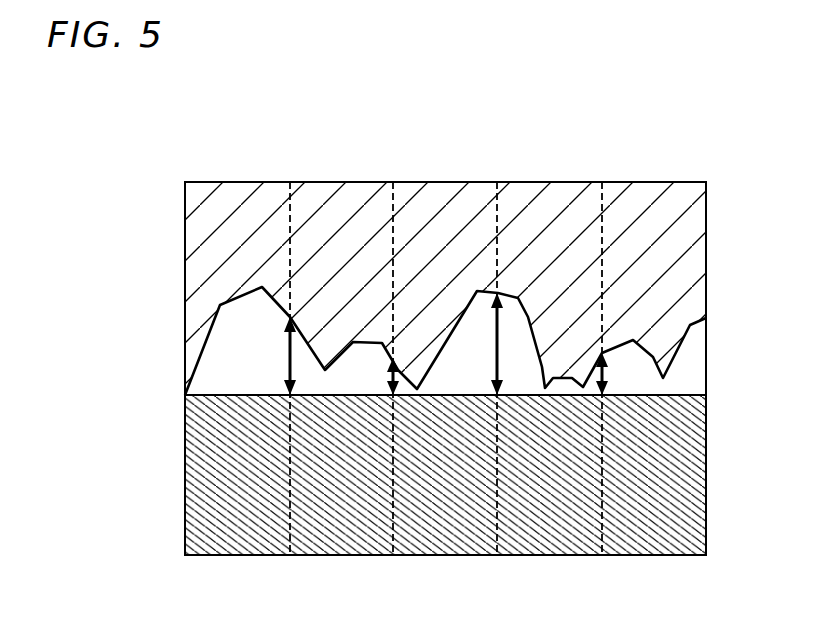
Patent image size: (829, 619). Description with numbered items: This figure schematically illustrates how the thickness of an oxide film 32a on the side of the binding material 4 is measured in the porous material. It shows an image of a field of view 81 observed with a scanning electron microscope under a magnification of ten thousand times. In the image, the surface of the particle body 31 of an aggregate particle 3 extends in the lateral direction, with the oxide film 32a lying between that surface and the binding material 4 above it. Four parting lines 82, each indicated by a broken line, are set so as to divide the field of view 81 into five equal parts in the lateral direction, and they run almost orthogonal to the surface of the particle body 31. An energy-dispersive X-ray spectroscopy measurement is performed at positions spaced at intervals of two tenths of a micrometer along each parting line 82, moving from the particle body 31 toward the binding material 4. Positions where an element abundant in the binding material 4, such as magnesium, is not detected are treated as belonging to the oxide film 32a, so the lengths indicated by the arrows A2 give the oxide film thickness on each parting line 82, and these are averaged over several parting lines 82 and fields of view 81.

The aggregate particle 3 is at (108, 399).
The particle body 31 is at (205, 437).
The oxide film 32a is at (222, 354).
The binding material 4 is at (227, 248).
The field of view 81 is at (307, 113).
The parting line 82 is at (290, 228).
The arrow A2 is at (283, 358).